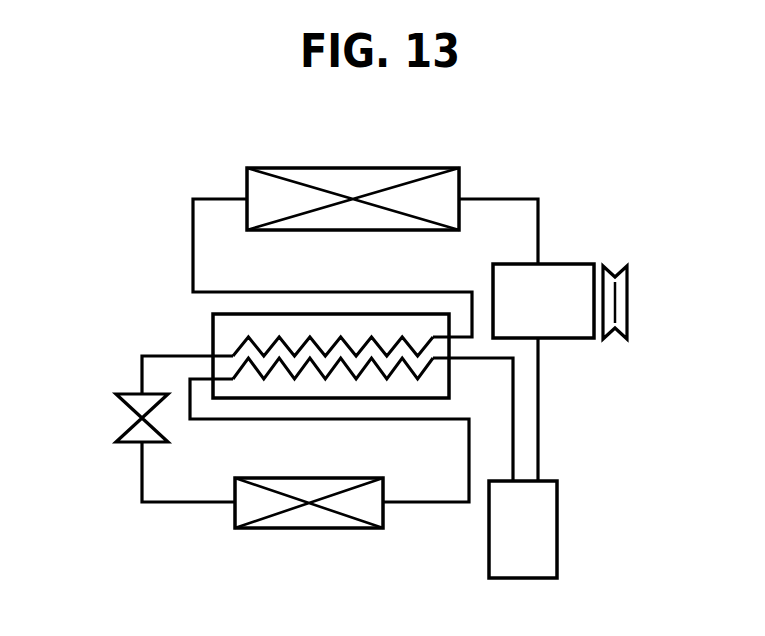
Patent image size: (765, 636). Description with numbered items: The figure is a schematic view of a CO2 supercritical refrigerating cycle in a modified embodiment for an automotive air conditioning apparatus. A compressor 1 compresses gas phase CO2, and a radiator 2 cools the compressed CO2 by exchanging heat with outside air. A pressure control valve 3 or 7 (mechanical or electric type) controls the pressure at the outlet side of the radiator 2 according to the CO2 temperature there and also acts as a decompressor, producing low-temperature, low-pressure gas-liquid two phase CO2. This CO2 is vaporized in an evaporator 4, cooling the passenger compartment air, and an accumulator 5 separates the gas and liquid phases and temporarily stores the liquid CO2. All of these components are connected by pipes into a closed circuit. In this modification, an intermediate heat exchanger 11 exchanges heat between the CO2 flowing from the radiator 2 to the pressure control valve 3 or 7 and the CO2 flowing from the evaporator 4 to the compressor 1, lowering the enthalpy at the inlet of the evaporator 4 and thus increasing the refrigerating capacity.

The compressor 1 is at (550, 264).
The radiator (gas cooler) 2 is at (377, 168).
The pressure control valve 3 is at (121, 448).
The pressure control valve 7 is at (133, 444).
The evaporator (heat sink) 4 is at (306, 530).
The accumulator (tank member) 5 is at (559, 528).
The intermediate heat exchanger 11 is at (213, 328).